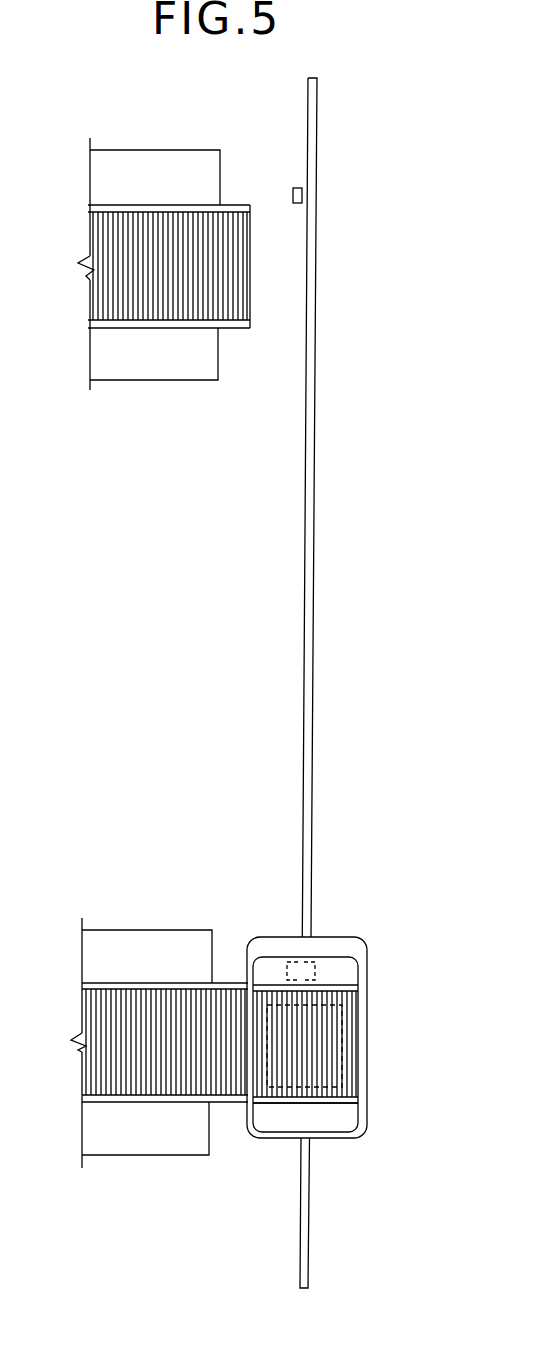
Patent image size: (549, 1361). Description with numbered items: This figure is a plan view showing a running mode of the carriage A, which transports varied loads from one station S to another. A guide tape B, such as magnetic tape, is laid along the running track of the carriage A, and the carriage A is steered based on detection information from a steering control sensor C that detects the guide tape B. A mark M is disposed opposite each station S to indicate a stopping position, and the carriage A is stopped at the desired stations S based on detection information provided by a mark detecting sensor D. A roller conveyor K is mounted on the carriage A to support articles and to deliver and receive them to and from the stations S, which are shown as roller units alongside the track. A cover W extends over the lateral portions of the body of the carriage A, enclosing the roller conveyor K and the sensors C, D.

The station S is at (120, 150).
The mark M is at (293, 190).
The guide tape B is at (313, 560).
The carriage A is at (360, 932).
The steering control sensor C is at (313, 958).
The mark detecting sensor D is at (284, 958).
The roller conveyor K is at (365, 1043).
The cover W is at (350, 1118).